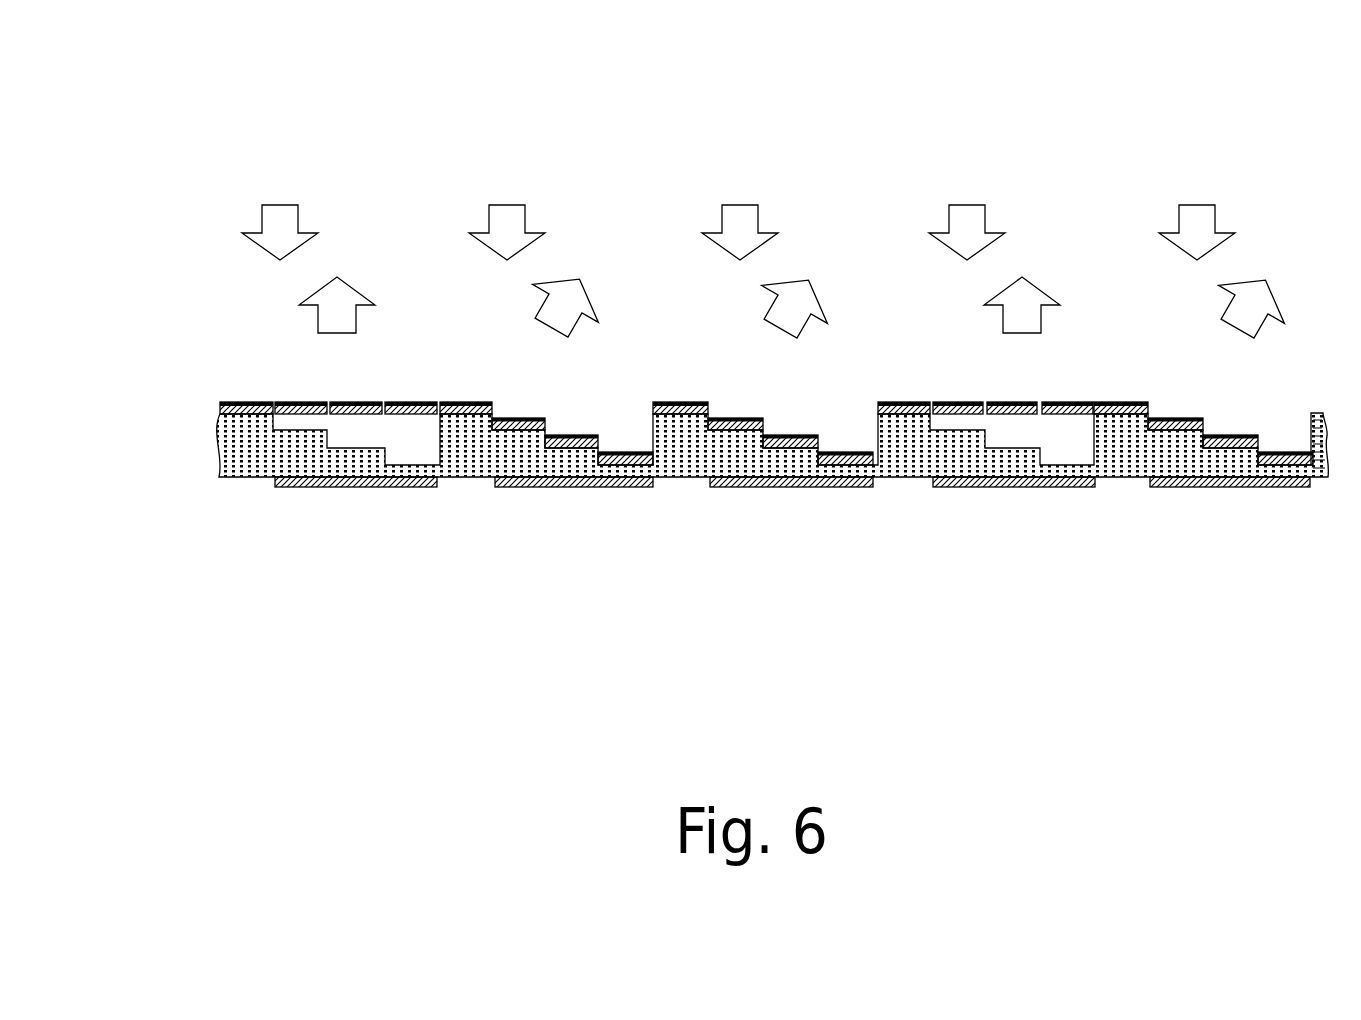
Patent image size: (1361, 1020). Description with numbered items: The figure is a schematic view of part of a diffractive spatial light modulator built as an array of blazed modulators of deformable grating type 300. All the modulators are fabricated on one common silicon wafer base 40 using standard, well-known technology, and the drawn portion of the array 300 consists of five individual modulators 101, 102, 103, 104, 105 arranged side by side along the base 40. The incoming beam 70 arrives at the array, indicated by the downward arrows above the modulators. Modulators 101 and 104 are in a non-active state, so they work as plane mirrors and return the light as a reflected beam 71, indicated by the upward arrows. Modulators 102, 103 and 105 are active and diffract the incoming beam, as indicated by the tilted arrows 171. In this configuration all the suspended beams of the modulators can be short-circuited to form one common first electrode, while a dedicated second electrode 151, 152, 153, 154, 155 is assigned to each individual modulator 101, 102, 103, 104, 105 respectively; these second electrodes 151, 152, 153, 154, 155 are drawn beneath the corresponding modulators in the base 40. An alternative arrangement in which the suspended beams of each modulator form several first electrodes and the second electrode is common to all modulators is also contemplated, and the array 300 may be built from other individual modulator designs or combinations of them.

The incoming beam 70 is at (740, 223).
The reflected beam 71 is at (1020, 300).
The diffracted beam arrows 171 is at (1252, 305).
The array of blazed modulators of deformable grating type 300 is at (724, 476).
The common silicon wafer base 40 is at (247, 440).
The first individual modulator 101 is at (310, 518).
The second individual modulator 102 is at (537, 518).
The third individual modulator 103 is at (765, 518).
The fourth individual modulator 104 is at (995, 518).
The fifth individual modulator 105 is at (1222, 518).
The second electrode 151 is at (298, 480).
The second electrode 152 is at (530, 485).
The second electrode 153 is at (755, 485).
The second electrode 154 is at (988, 485).
The second electrode 155 is at (1215, 485).